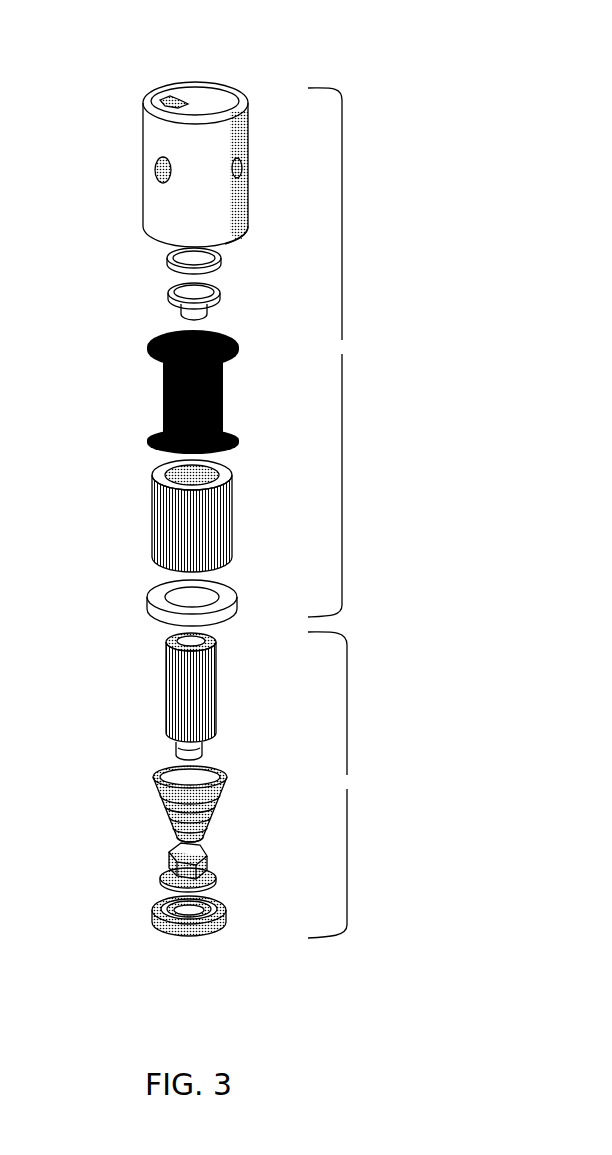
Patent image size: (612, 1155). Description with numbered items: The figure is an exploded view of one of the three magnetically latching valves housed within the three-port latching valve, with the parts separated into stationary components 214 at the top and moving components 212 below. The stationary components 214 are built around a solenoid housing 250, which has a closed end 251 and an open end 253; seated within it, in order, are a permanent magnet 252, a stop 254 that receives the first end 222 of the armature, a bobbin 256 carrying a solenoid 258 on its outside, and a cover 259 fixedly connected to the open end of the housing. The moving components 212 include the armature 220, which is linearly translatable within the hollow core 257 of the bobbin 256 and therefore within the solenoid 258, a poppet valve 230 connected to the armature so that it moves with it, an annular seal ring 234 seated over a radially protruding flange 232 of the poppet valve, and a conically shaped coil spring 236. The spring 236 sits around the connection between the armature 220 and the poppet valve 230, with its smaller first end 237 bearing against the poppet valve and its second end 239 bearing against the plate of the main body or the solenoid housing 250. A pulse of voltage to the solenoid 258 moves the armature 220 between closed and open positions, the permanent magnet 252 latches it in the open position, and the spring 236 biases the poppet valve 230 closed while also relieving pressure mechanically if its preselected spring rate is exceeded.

The moving components 212 is at (347, 775).
The stationary components 214 is at (342, 340).
The armature 220 is at (172, 692).
The first end of the armature 222 is at (183, 643).
The poppet valve 230 is at (205, 865).
The radially protruding flange 232 is at (160, 879).
The annular seal ring 234 is at (155, 922).
The spring 236 is at (160, 801).
The first end of the spring 237 is at (195, 833).
The second end of the spring 239 is at (155, 783).
The solenoid housing 250 is at (145, 158).
The closed end 251 is at (213, 90).
The permanent magnet 252 is at (168, 262).
The open end 253 is at (233, 232).
The stop 254 is at (170, 291).
The bobbin 256 is at (162, 393).
The hollow core 257 is at (207, 336).
The solenoid 258 is at (152, 508).
The cover 259 is at (147, 597).